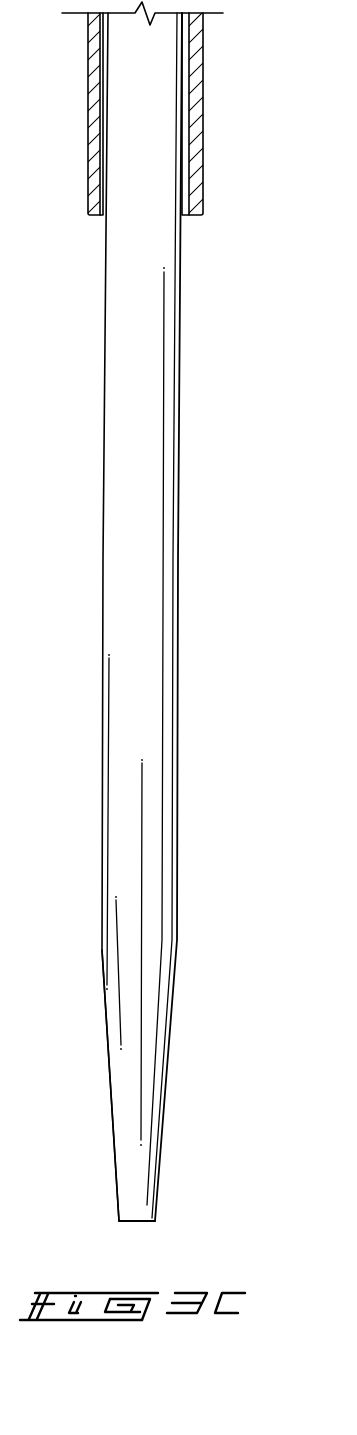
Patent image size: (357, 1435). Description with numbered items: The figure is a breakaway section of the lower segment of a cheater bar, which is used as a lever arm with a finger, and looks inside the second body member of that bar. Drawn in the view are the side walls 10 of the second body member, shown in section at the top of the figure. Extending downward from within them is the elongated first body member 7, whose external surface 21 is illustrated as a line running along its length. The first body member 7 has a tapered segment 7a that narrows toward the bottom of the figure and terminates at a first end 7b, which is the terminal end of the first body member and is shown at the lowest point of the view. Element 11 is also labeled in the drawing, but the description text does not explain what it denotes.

The sleeve 10 is at (92, 147).
The tube 11 is at (186, 172).
The inner channel line 21 is at (183, 313).
The tapered tube section 7 is at (192, 528).
The tapered wall portion 7a is at (112, 1100).
The tip end 7b is at (139, 1232).